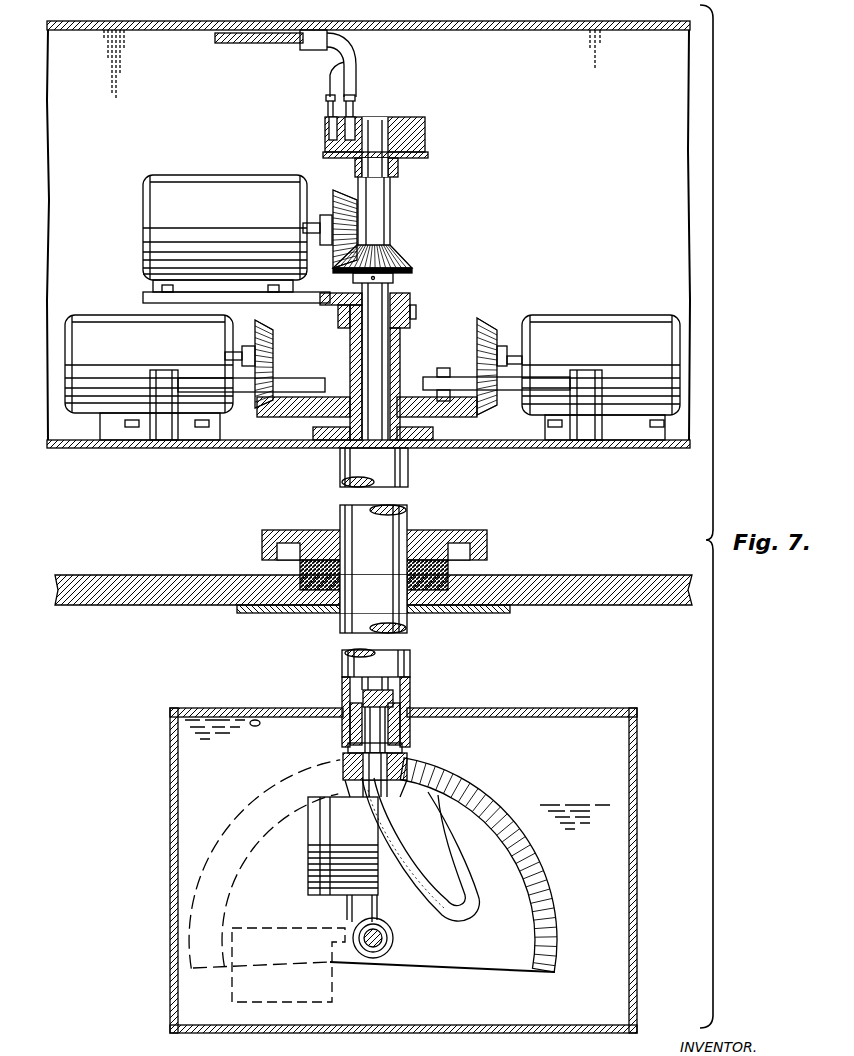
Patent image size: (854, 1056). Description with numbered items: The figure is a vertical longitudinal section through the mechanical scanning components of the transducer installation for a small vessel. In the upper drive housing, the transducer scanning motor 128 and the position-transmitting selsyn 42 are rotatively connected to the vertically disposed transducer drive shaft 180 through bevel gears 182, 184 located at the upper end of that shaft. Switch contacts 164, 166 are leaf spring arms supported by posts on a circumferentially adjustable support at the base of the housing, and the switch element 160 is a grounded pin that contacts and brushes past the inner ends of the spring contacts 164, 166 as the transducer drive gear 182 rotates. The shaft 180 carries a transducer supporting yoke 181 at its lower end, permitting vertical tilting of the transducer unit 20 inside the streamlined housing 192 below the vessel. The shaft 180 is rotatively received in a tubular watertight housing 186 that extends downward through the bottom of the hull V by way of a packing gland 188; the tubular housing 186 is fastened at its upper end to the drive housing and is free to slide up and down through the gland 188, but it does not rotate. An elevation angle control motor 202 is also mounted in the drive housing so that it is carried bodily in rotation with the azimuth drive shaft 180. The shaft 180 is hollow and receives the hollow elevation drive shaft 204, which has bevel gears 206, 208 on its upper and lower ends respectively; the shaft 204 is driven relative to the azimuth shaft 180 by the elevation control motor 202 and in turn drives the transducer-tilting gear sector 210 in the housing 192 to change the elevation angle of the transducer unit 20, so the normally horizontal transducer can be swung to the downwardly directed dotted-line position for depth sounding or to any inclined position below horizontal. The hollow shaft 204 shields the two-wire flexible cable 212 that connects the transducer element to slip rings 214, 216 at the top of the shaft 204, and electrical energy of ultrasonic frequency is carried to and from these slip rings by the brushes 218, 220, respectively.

The transducer unit 20 is at (308, 862).
The position-transmitting selsyn 42 is at (567, 317).
The transducer scanning motor 128 is at (107, 315).
The switch element 160 is at (443, 368).
The switch contact 164 is at (288, 377).
The switch contact 166 is at (462, 377).
The transducer drive shaft 180 is at (402, 345).
The transducer supporting yoke 181 is at (346, 920).
The bevel gear 182 is at (333, 396).
The bevel gear 184 is at (273, 331).
The tubular watertight housing 186 is at (408, 471).
The packing gland 188 is at (435, 530).
The streamlined housing 192 is at (510, 712).
The elevation angle control motor 202 is at (215, 177).
The elevation drive shaft 204 is at (390, 292).
The bevel gear 206 is at (408, 257).
The bevel gear 208 is at (340, 766).
The transducer-tilting gear sector 210 is at (492, 802).
The two-wire flexible cable 212 is at (440, 856).
The slip ring 214 is at (402, 116).
The slip ring 216 is at (420, 112).
The brush 218 is at (326, 99).
The brush 220 is at (352, 102).
The hull V is at (545, 577).